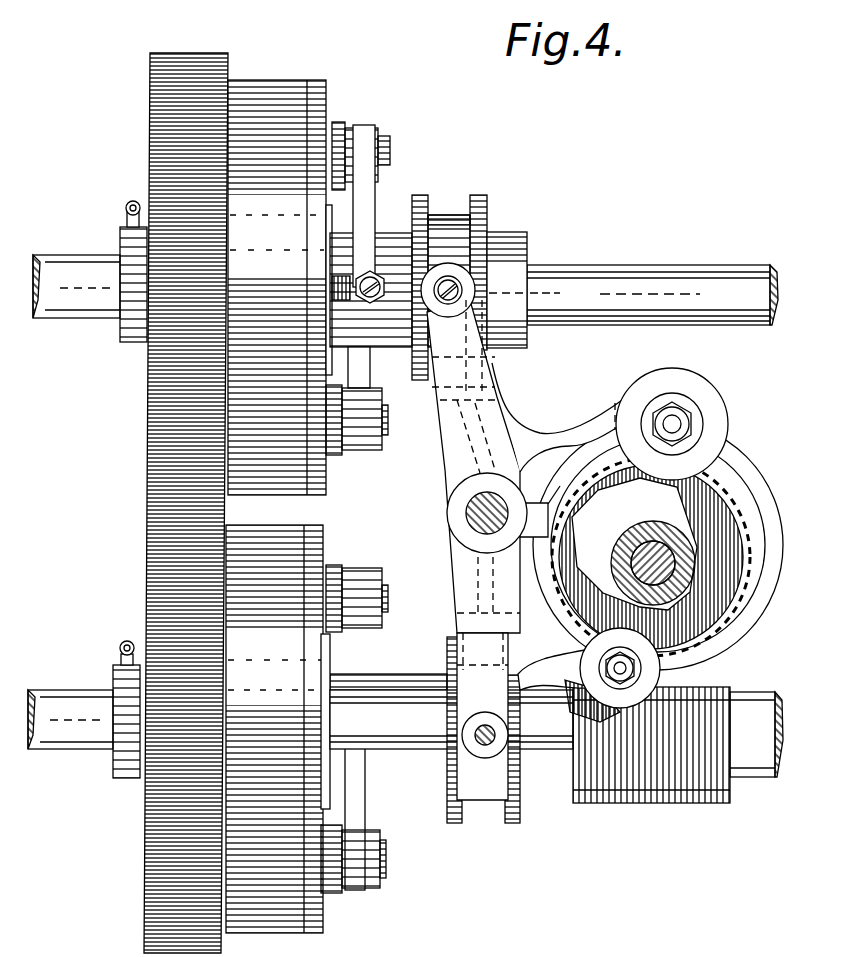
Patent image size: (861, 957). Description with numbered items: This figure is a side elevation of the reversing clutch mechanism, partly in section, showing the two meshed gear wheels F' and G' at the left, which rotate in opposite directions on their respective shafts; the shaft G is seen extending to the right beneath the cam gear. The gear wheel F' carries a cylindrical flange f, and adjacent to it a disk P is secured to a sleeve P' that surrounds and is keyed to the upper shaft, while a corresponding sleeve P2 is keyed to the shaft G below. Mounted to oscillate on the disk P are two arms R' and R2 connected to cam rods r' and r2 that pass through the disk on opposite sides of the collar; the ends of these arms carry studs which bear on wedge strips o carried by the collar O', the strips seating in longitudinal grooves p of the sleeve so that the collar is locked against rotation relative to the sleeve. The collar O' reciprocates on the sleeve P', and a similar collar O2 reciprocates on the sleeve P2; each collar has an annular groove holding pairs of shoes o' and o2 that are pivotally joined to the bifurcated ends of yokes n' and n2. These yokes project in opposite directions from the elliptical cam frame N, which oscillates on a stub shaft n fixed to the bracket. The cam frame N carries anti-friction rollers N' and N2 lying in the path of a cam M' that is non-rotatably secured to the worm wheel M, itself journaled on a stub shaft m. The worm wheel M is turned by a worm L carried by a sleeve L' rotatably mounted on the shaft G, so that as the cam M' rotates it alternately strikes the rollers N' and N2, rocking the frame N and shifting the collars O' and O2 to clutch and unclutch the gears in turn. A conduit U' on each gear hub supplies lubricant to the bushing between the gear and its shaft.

The gear wheel F' is at (424, 488).
The disk P is at (298, 283).
The cylindrical flange f is at (253, 226).
The conduit U' is at (90, 256).
The cam rod r' is at (377, 152).
The oscillatory arm R' is at (397, 214).
The longitudinal groove p is at (326, 278).
The wedge strip o is at (388, 507).
The shoes o' is at (449, 203).
The collar O' is at (499, 250).
The sleeve P' is at (525, 260).
The oscillatory arm R2 is at (372, 368).
The cam rod r2 is at (388, 427).
The disk g is at (278, 729).
The gear wheel G' is at (110, 849).
The sleeve P2 is at (441, 790).
The shoes o2 is at (488, 805).
The collar O2 is at (520, 810).
The shaft G is at (756, 777).
The worm L is at (651, 780).
The sleeve L' is at (720, 838).
The cam frame N is at (658, 527).
The worm wheel M is at (666, 538).
The stub shaft m is at (642, 540).
The yoke n' is at (526, 448).
The stub shaft n is at (463, 513).
The yoke n2 is at (478, 668).
The anti-friction roller N2 is at (592, 652).
The anti-friction roller N' is at (677, 412).
The cam M' is at (547, 470).